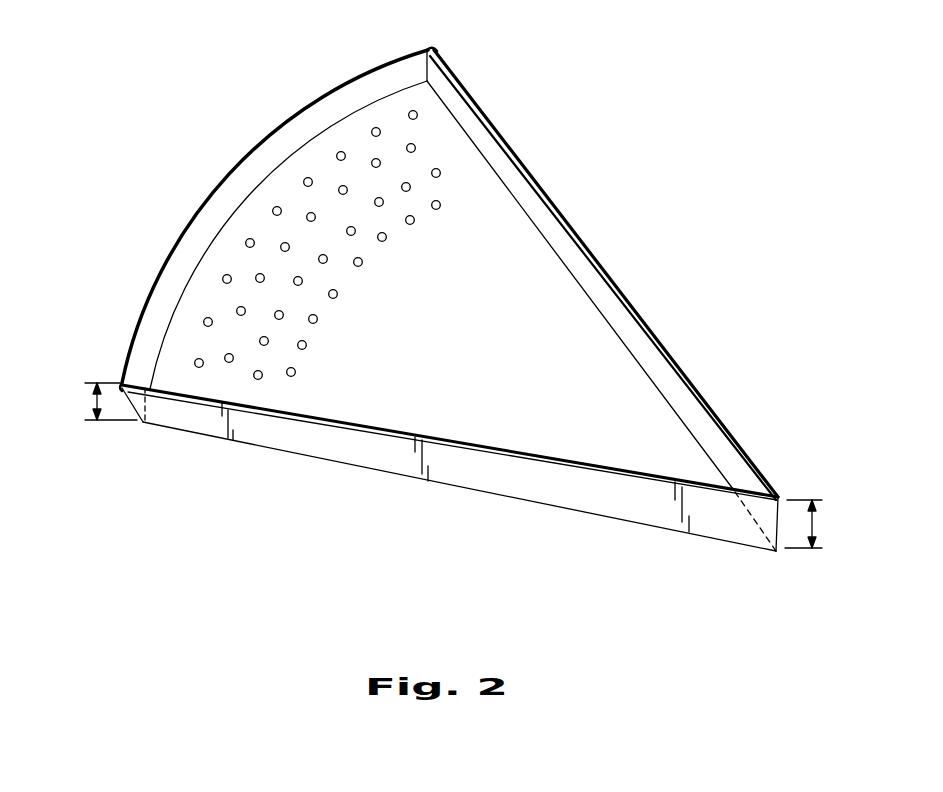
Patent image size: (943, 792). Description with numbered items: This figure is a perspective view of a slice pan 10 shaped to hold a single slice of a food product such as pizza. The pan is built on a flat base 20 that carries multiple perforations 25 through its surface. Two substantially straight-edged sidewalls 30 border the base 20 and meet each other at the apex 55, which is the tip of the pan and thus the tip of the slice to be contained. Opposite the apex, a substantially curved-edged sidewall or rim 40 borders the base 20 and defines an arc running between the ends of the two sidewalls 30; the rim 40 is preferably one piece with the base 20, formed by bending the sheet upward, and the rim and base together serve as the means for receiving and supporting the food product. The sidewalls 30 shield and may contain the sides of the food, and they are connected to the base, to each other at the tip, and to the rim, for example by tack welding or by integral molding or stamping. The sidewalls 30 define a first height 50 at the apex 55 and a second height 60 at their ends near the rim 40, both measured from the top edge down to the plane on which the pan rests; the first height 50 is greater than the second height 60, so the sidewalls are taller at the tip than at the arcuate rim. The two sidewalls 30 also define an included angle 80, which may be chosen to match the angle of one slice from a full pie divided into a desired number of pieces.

The slice pan 10 is at (260, 58).
The base 20 is at (572, 413).
The perforations 25 is at (362, 262).
The substantially straight-edged sidewalls 30 is at (592, 278).
The curved-edged sidewall or rim 40 is at (218, 210).
The first height 50 is at (822, 528).
The apex 55 is at (778, 560).
The second height 60 is at (90, 400).
The included angle 80 is at (727, 438).